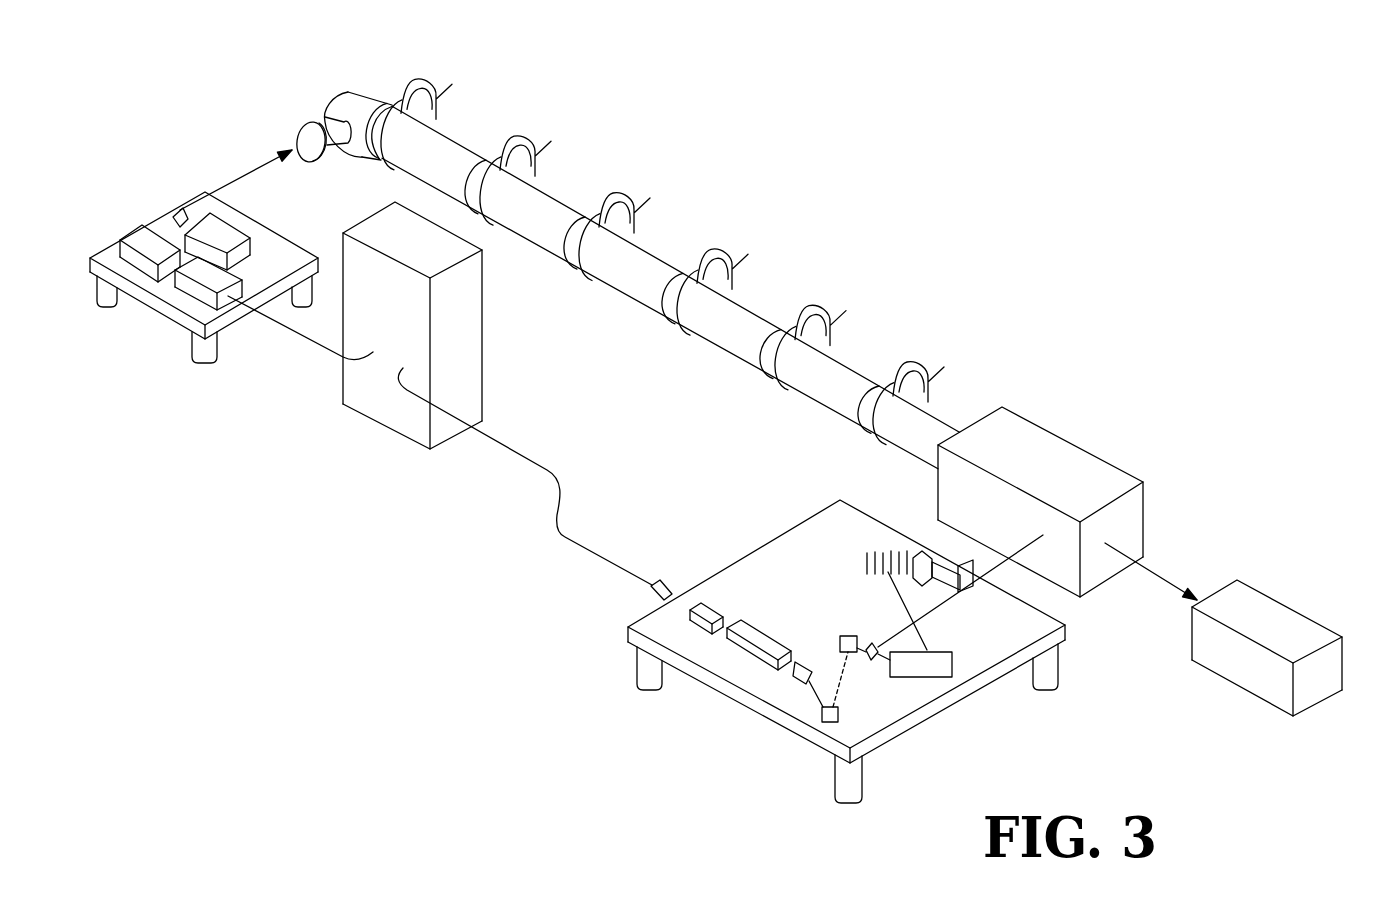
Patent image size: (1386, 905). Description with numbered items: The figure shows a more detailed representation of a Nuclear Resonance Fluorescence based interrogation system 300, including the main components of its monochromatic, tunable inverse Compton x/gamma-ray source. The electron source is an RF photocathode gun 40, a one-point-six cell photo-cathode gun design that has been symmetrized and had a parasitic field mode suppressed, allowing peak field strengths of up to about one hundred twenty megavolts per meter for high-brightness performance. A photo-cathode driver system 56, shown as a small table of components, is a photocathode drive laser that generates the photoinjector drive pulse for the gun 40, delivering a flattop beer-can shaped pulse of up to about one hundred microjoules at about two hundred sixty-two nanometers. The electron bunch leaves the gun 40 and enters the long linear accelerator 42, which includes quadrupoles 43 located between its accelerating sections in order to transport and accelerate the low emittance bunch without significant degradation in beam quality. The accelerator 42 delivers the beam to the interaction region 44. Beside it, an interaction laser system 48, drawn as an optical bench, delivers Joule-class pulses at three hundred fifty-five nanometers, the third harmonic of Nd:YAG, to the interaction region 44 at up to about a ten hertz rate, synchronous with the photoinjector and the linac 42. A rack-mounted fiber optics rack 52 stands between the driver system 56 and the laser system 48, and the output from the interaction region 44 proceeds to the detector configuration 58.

The NRF based interrogation system 300 is at (1008, 173).
The RF photocathode gun 40 is at (325, 115).
The linear accelerator 42 is at (653, 253).
The quadrupoles 43 is at (430, 117).
The interaction region 44 is at (1074, 465).
The interaction laser system 48 is at (740, 570).
The fiber optics rack 52 is at (465, 368).
The photo-cathode driver system 56 is at (100, 247).
The detector configuration 58 is at (1253, 607).